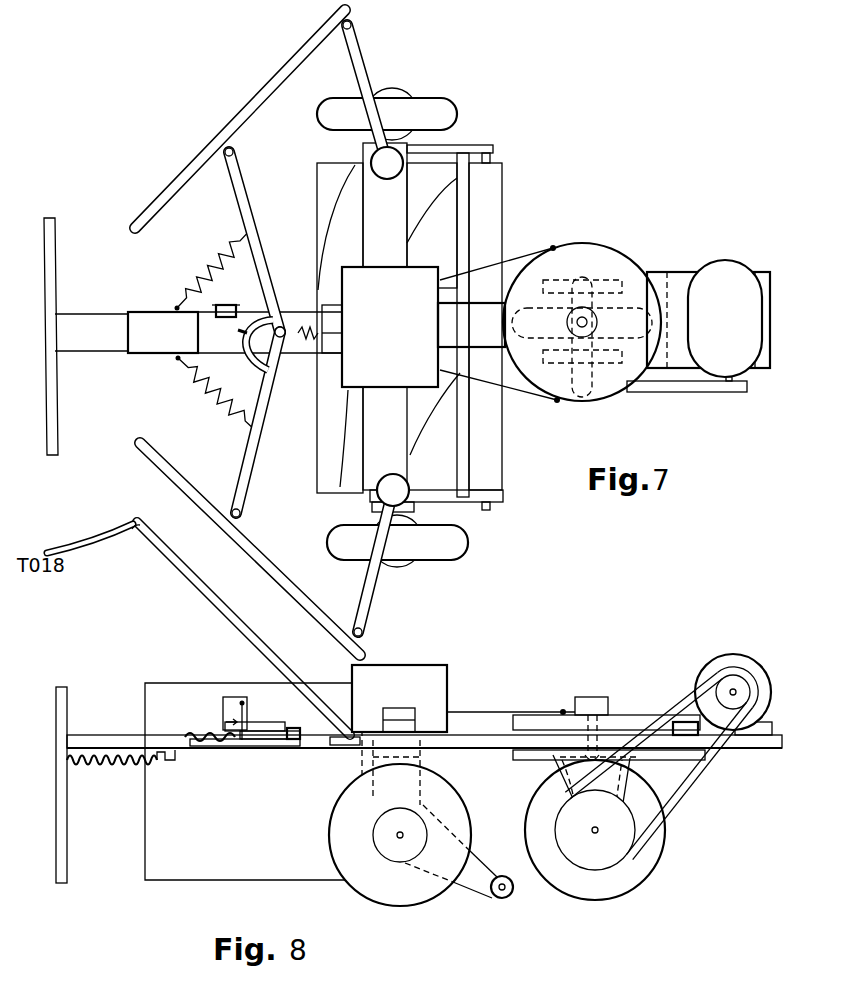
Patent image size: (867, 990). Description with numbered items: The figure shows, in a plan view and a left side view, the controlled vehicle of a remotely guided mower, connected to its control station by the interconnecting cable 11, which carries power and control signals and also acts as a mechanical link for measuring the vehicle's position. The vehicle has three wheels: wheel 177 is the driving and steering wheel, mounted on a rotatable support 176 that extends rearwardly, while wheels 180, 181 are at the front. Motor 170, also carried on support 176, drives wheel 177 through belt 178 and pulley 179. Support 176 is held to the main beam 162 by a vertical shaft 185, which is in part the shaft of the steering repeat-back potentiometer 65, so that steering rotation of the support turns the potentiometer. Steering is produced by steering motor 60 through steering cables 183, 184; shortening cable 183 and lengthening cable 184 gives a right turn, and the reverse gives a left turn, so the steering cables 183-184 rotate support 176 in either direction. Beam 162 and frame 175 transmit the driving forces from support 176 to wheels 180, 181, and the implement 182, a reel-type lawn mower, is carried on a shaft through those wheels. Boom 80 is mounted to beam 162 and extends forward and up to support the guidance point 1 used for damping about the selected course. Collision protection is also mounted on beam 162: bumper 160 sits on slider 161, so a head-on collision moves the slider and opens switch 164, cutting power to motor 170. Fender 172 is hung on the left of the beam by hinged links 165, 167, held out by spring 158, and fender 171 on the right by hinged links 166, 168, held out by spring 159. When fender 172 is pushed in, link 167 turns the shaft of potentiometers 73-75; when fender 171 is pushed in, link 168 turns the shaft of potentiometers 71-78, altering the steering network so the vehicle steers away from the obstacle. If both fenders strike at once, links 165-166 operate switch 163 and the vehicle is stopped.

In FIG. 7, the guidance point 1 is at (143, 518).
In FIG. 7, the interconnecting cable 11 is at (90, 535).
In FIG. 7, the steering motor 60 is at (390, 327).
In FIG. 8, the steering motor 60 is at (399, 698).
In FIG. 7, the potentiometer 65 is at (606, 318).
In FIG. 8, the potentiometer 65 is at (599, 697).
In FIG. 7, the potentiometers 71-78 is at (372, 157).
In FIG. 7, the potentiometers 73-75 is at (378, 497).
In FIG. 8, the potentiometers 73-75 is at (413, 710).
In FIG. 7, the boom 80 is at (243, 519).
In FIG. 7, the spring 158 is at (212, 268).
In FIG. 7, the spring 159 is at (217, 395).
In FIG. 7, the bumper 160 is at (70, 336).
In FIG. 8, the bumper 160 is at (82, 777).
In FIG. 7, the slider 161 is at (126, 332).
In FIG. 8, the slider 161 is at (424, 729).
In FIG. 7, the beam 162 is at (471, 325).
In FIG. 8, the beam 162 is at (445, 748).
In FIG. 7, the switch 163 is at (249, 355).
In FIG. 8, the switch 163 is at (254, 722).
In FIG. 7, the switch 164 is at (216, 306).
In FIG. 8, the switch 164 is at (223, 705).
In FIG. 7, the hinged link 165 is at (261, 424).
In FIG. 7, the hinged link 166 is at (237, 240).
In FIG. 8, the hinged links 165-166 is at (305, 735).
In FIG. 7, the hinged link 167 is at (385, 563).
In FIG. 8, the hinged link 167 is at (364, 748).
In FIG. 7, the hinged link 168 is at (354, 92).
In FIG. 7, the motor 170 is at (725, 318).
In FIG. 8, the motor 170 is at (720, 662).
In FIG. 7, the fender 171 is at (267, 80).
In FIG. 8, the fender 171 is at (253, 780).
In FIG. 7, the fender 172 is at (250, 549).
In FIG. 7, the frame 175 is at (386, 316).
In FIG. 7, the rotatable support 176 is at (708, 305).
In FIG. 8, the rotatable support 176 is at (654, 707).
In FIG. 8, the wheel 177 is at (595, 830).
In FIG. 7, the belt 178 is at (687, 396).
In FIG. 8, the belt 178 is at (661, 763).
In FIG. 8, the pulley 179 is at (595, 830).
In FIG. 7, the wheel 180 is at (387, 114).
In FIG. 7, the wheel 181 is at (397, 541).
In FIG. 8, the wheel 181 is at (400, 823).
In FIG. 7, the implement 182 is at (454, 325).
In FIG. 8, the implement 182 is at (482, 892).
In FIG. 7, the steering cable 183 is at (521, 246).
In FIG. 7, the steering cable 184 is at (528, 405).
In FIG. 8, the steering cables 183-184 is at (474, 712).
In FIG. 8, the vertical shaft 185 is at (581, 798).